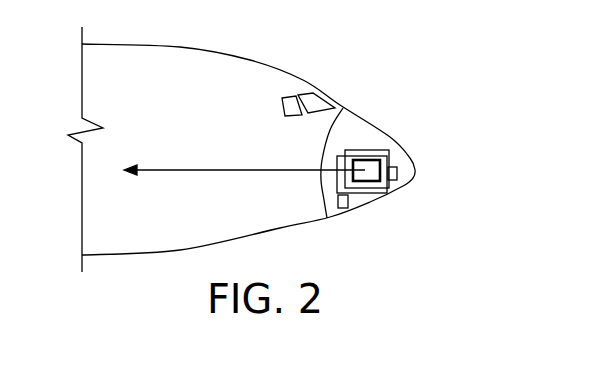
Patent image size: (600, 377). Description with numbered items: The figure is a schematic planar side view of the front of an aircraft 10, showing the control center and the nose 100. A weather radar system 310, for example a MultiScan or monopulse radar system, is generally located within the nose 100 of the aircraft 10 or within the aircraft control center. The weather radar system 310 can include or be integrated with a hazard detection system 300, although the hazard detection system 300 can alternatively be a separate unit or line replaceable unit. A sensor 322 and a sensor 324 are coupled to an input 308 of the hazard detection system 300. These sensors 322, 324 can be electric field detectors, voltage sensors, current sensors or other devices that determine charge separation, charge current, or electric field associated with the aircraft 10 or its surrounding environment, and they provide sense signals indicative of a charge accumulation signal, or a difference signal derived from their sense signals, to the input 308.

The aircraft 10 is at (128, 57).
The nose 100 is at (345, 124).
The hazard detection system 300 is at (358, 172).
The input 308 is at (168, 172).
The weather radar system 310 is at (377, 149).
The sensor 322 is at (349, 207).
The sensor 324 is at (398, 178).